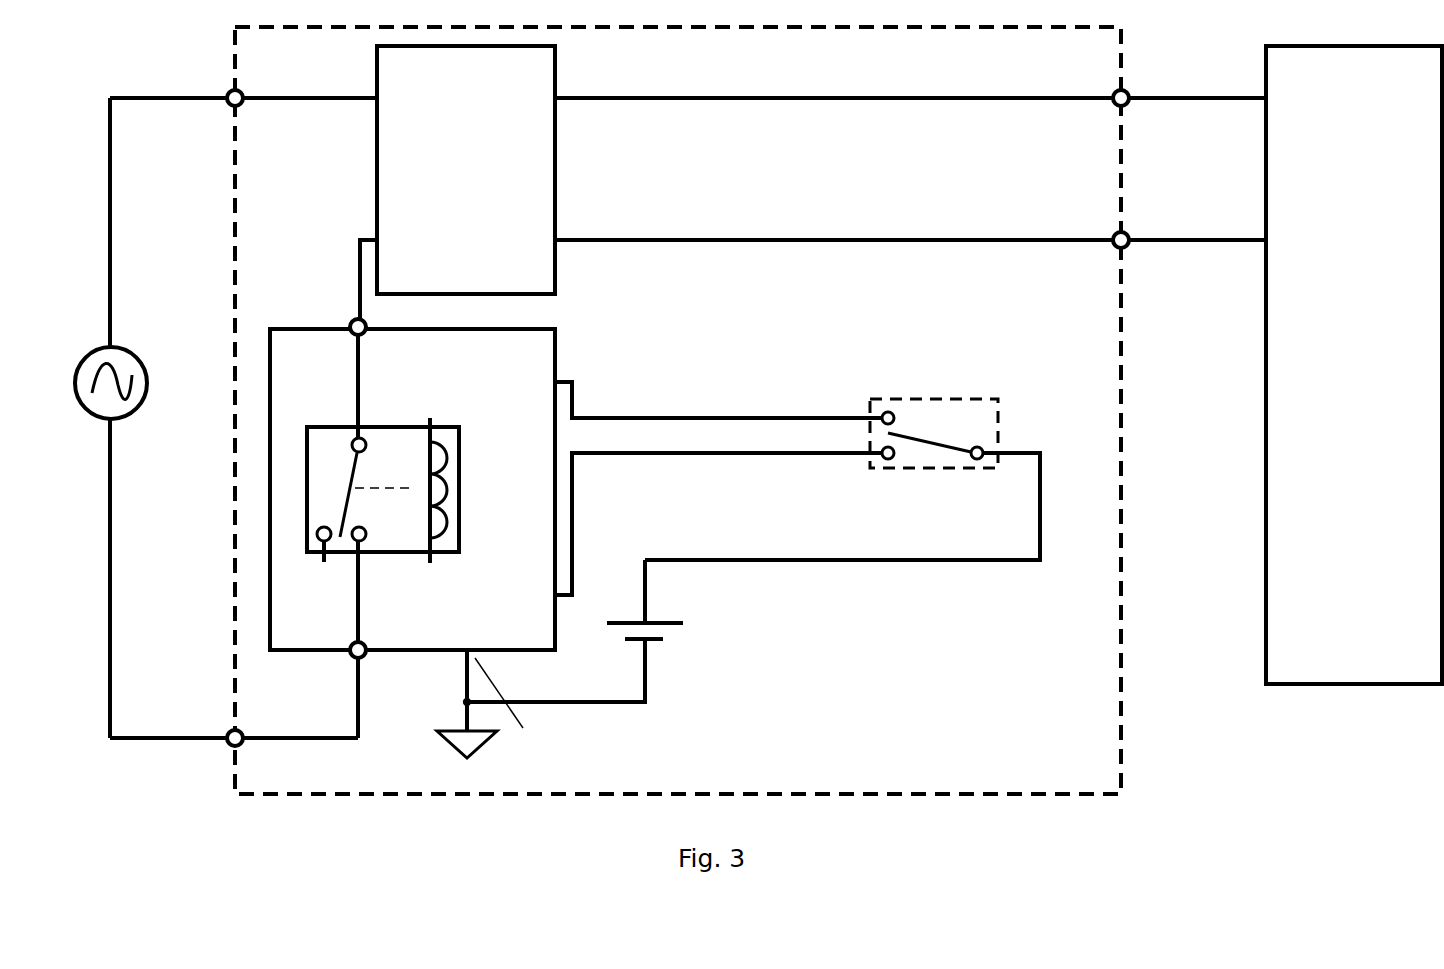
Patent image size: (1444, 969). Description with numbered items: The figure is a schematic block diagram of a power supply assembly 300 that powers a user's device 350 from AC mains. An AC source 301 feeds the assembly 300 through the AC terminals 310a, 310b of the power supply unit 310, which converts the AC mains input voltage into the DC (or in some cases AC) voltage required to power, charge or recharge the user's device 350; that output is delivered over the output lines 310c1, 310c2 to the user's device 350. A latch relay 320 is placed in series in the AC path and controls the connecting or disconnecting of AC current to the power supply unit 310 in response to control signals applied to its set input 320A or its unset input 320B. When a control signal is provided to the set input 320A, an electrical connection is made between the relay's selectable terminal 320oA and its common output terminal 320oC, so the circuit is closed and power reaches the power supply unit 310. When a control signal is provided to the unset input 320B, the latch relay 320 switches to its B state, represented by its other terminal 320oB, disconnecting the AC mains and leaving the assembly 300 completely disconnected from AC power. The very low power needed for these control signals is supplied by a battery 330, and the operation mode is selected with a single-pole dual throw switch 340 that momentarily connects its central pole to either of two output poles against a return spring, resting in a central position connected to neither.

The power supply assembly 300 is at (678, 410).
The AC power source 301 is at (216, 422).
The power supply unit 310 is at (466, 170).
The power supply first AC input 310a is at (302, 86).
The power supply second AC input 310b is at (339, 260).
The power supply first output 310c1 is at (910, 86).
The power supply second output 310c2 is at (910, 229).
The latch relay 320 is at (458, 554).
The selectable terminal 320oA is at (372, 556).
The relay output terminal B 320oB is at (301, 554).
The common output terminal 320oC is at (352, 322).
The set input 320A is at (718, 381).
The unset input 320B is at (718, 524).
The battery 330 is at (607, 631).
The single-pole dual throw switch 340 is at (842, 479).
The user's device 350 is at (1354, 365).